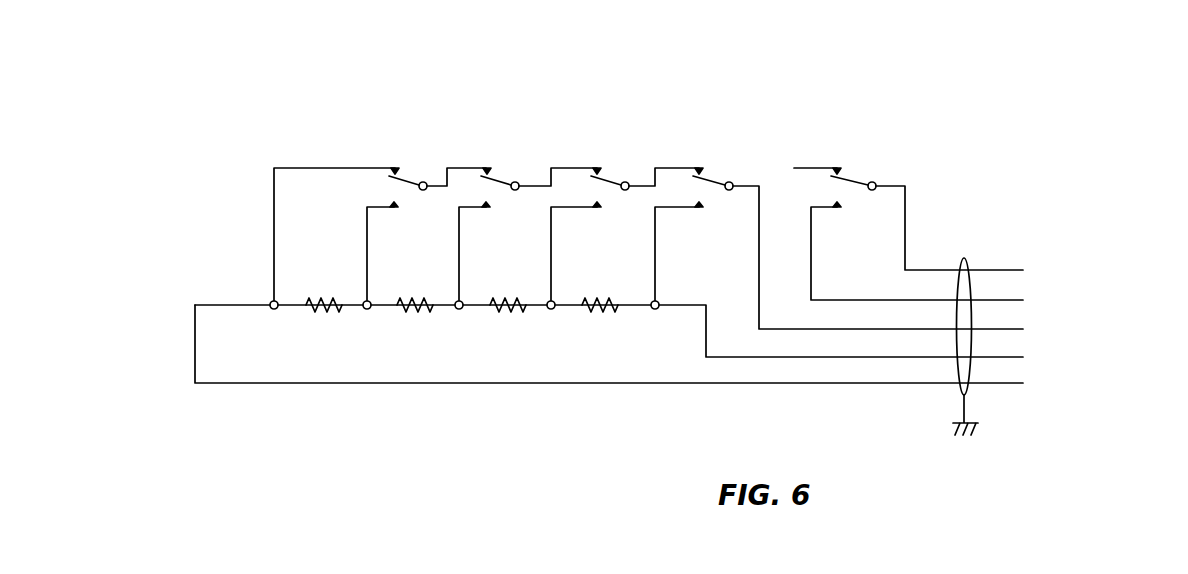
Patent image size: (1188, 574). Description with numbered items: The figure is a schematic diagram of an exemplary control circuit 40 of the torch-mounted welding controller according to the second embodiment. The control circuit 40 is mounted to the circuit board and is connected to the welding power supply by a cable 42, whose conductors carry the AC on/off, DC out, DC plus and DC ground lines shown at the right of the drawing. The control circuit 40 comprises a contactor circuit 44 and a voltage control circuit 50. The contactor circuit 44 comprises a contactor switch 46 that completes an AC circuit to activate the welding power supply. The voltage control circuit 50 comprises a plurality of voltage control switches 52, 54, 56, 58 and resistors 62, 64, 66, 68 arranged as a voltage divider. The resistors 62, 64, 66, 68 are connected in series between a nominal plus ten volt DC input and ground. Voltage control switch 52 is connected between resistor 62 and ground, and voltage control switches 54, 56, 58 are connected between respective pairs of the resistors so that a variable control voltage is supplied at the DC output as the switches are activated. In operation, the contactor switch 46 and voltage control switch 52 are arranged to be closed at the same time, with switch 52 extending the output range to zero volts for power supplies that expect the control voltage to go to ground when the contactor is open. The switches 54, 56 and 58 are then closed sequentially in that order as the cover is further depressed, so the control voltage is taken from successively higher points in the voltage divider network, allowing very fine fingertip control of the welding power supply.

The control circuit 40 is at (935, 53).
The cable 42 is at (964, 258).
The contactor circuit 44 is at (943, 194).
The contactor switch 46 is at (852, 182).
The voltage control circuit 50 is at (238, 158).
The voltage control switch 52 is at (404, 182).
The voltage control switch 54 is at (498, 182).
The voltage control switch 56 is at (610, 182).
The voltage control switch 58 is at (710, 182).
The resistor 62 is at (325, 313).
The resistor 64 is at (415, 313).
The resistor 66 is at (508, 313).
The resistor 68 is at (600, 313).